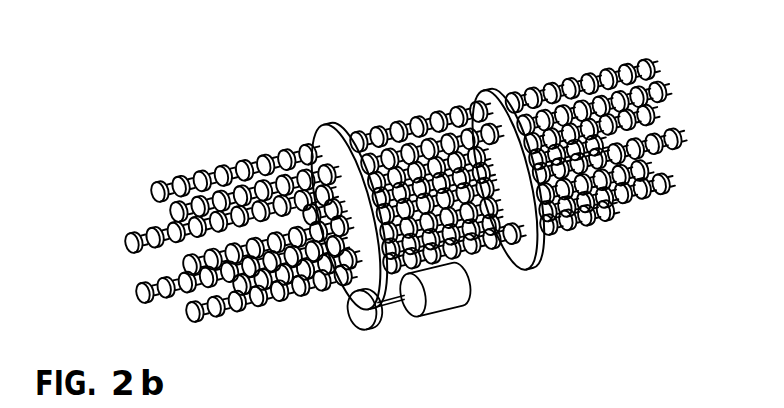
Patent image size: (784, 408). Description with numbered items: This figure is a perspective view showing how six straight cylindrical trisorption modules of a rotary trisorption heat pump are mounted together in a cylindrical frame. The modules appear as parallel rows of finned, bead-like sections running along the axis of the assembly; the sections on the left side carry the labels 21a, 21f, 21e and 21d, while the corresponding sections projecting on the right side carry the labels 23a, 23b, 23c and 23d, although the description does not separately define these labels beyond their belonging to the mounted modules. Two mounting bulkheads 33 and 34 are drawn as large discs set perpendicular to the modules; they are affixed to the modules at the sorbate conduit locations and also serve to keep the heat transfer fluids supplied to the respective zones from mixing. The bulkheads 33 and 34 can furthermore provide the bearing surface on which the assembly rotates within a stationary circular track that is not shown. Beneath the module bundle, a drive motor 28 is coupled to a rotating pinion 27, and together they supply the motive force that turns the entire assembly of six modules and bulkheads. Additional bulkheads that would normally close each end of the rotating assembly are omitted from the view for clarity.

The disc roller rod 21a is at (163, 186).
The disc roller rod 21d is at (184, 320).
The disc roller rod 21e is at (143, 295).
The disc roller rod 21f is at (135, 241).
The disc roller rod 23a is at (670, 61).
The disc roller rod 23b is at (677, 90).
The disc roller rod 23c is at (689, 139).
The disc roller rod 23d is at (694, 184).
The mounting bulkhead 33 is at (324, 127).
The mounting bulkhead 34 is at (478, 90).
The rotating pinion 27 is at (353, 321).
The drive motor 28 is at (467, 308).